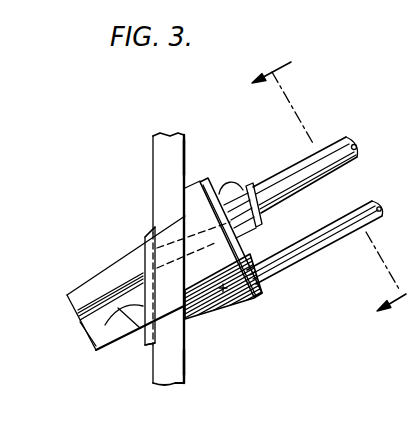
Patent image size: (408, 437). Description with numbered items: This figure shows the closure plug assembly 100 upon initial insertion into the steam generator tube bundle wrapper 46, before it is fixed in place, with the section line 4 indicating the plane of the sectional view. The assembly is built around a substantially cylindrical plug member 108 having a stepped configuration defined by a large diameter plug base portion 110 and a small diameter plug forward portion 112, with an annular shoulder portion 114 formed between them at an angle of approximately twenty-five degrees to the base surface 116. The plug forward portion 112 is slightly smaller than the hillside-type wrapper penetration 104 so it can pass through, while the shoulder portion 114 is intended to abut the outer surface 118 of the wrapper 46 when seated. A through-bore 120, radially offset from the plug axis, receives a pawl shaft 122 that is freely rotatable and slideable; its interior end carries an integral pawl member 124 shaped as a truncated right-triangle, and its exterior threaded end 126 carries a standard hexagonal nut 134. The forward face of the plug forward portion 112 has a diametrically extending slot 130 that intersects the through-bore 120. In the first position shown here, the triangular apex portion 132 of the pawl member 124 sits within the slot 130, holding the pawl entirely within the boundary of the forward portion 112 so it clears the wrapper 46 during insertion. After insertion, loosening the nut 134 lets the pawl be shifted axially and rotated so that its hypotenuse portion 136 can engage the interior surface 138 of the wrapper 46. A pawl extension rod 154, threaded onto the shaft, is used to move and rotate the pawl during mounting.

The steam generator tube bundle wrapper 46 is at (173, 147).
The outer surface 118 is at (187, 158).
The wrapper penetration 104 is at (146, 346).
The through-bore 120 is at (156, 228).
The pawl shaft 122 is at (63, 306).
The diametrically extending slot 130 is at (123, 274).
The pawl member 124 is at (78, 322).
The hypotenuse portion 136 is at (117, 337).
The triangular apex portion 132 is at (133, 320).
The plug forward portion 112 is at (144, 326).
The interior surface 138 is at (150, 368).
The closure plug assembly 100 is at (130, 236).
The plug member 108 is at (253, 300).
The hexagonal nut 134 is at (258, 228).
The threaded end 126 is at (244, 187).
The pawl extension rod 154 is at (321, 157).
The base surface 116 is at (271, 266).
The plug base portion 110 is at (205, 330).
The annular shoulder portion 114 is at (184, 363).
The section line 4- 4 is at (329, 193).